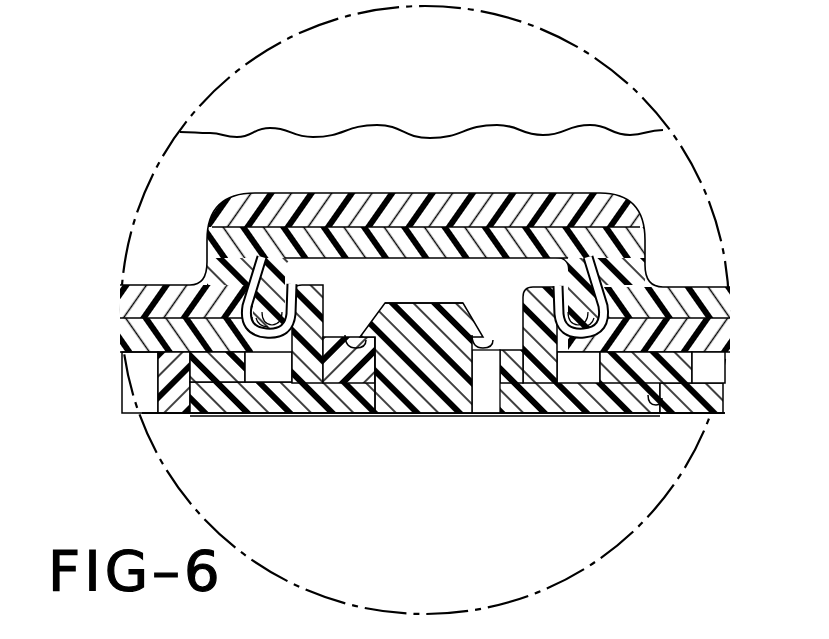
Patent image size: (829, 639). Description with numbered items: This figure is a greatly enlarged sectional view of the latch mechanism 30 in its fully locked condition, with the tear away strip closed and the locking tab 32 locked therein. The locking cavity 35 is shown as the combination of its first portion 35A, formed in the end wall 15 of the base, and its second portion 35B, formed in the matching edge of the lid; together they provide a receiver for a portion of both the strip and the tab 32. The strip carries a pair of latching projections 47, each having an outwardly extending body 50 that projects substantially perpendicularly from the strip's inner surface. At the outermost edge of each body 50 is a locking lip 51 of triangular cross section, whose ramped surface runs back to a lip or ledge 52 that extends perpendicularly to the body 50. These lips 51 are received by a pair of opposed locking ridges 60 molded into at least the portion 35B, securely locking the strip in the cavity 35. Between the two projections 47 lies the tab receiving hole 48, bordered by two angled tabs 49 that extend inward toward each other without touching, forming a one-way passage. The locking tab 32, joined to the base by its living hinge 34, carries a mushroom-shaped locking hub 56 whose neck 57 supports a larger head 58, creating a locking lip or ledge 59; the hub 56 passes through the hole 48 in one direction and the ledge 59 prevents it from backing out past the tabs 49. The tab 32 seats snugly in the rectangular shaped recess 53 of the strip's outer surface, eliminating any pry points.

The end wall 15 is at (138, 298).
The latch mechanism 30 is at (452, 430).
The locking tab 32 is at (150, 372).
The living hinge 34 is at (215, 415).
The locking cavity 35 is at (424, 238).
The first portion of locking cavity 35A is at (398, 230).
The second portion of locking cavity 35B is at (462, 275).
The latching projections 47 is at (297, 275).
The tab receiving hole 48 is at (488, 398).
The angled tabs 49 is at (362, 352).
The outwardly extending body 50 is at (318, 298).
The locking lip 51 is at (283, 290).
The lip or ledge 52 is at (255, 316).
The rectangular shaped recess 53 is at (655, 408).
The locking hub 56 is at (393, 412).
The neck 57 is at (437, 403).
The head 58 is at (435, 305).
The locking lip or ledge 59 is at (360, 342).
The locking ridges 60 is at (278, 338).